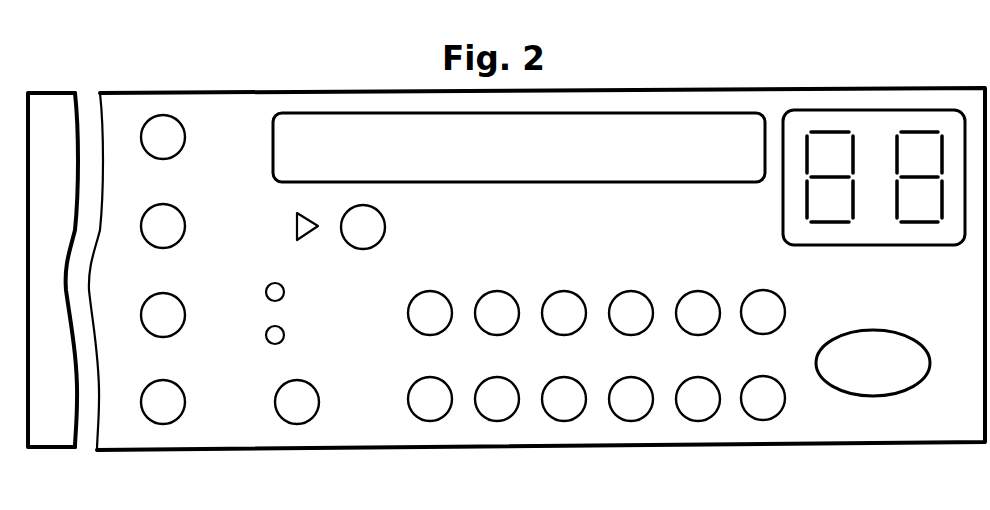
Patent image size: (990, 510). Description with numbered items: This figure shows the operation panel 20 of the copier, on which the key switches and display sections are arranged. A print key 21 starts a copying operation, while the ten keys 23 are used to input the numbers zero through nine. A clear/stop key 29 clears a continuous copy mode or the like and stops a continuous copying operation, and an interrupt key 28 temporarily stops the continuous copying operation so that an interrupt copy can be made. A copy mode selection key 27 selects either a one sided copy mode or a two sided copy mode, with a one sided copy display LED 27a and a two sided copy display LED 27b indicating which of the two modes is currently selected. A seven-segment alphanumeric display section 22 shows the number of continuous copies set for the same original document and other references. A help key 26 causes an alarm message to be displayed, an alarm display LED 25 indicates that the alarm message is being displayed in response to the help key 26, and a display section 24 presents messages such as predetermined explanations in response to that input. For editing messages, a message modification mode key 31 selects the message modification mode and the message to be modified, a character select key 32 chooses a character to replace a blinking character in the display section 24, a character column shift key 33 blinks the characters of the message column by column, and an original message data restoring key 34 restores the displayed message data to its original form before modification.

The operation panel 20 is at (885, 87).
The print key 21 is at (913, 387).
The 7-segment alphanumeric display section 22 is at (897, 246).
The ten keys 23 is at (592, 371).
The display section 24 is at (698, 182).
The alarm display LED 25 is at (294, 226).
The help key 26 is at (366, 249).
The copy mode selection key 27 is at (277, 395).
The one sided copy display LED 27a is at (266, 292).
The two sided copy display LED 27b is at (266, 335).
The interrupt key 28 is at (785, 303).
The clear/stop key 29 is at (785, 404).
The message modification mode key 31 is at (185, 136).
The character select key 32 is at (157, 207).
The character column shift key 33 is at (157, 295).
The original message data restoring key 34 is at (157, 382).